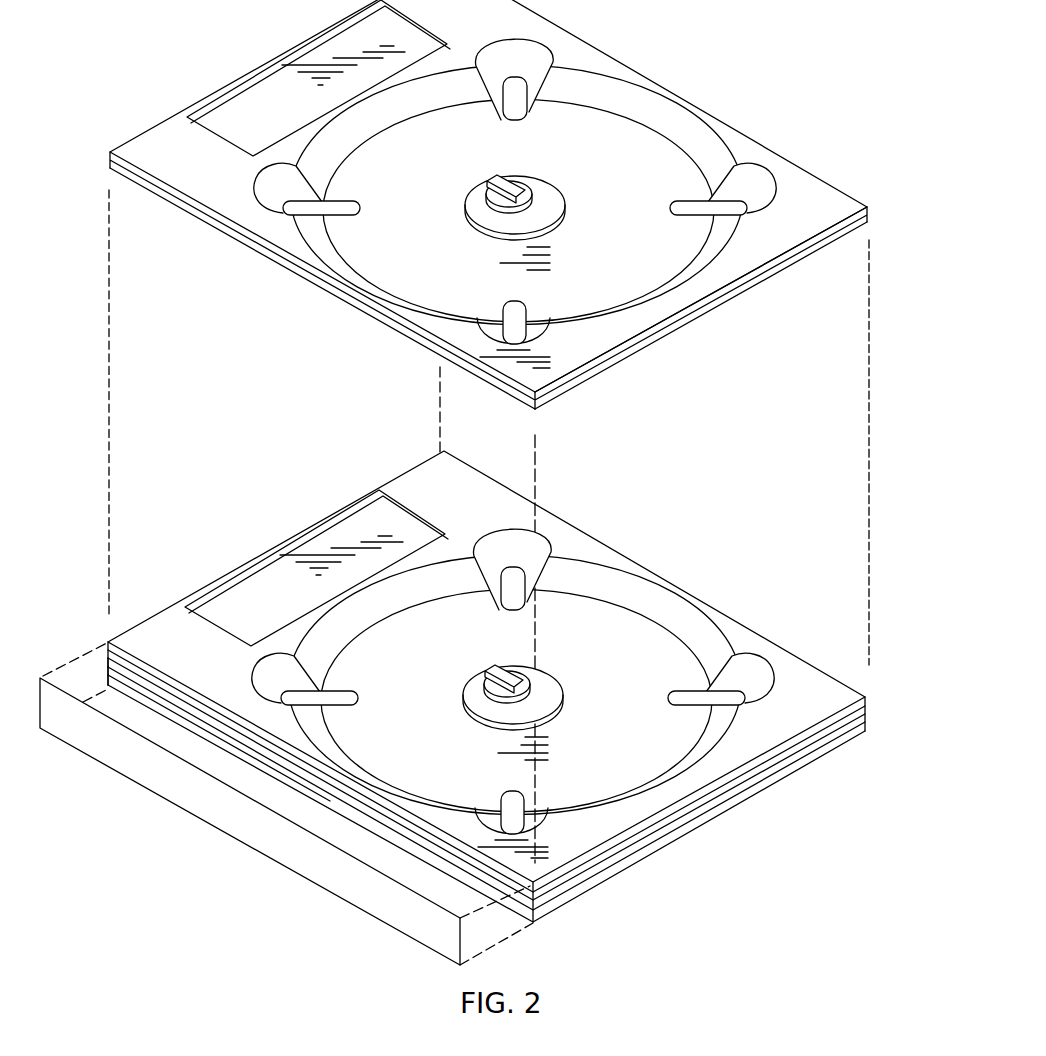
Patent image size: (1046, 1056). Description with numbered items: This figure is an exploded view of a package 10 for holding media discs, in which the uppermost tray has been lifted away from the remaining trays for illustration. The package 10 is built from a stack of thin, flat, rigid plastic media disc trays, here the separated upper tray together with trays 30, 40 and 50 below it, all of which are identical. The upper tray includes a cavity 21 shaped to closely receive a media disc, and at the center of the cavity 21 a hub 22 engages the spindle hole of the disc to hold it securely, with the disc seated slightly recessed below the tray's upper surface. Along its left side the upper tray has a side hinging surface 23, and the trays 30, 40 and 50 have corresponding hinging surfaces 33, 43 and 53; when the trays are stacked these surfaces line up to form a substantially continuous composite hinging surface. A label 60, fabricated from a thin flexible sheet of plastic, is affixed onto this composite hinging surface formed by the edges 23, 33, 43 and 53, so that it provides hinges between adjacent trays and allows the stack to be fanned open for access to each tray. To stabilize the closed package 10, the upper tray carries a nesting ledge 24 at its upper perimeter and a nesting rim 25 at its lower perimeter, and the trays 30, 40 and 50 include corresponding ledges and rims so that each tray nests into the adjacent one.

The package 10 is at (488, 204).
The cavity 21 is at (637, 155).
The hub 22 is at (483, 200).
The side hinging surface 23 is at (228, 232).
The nesting ledge 24 is at (600, 362).
The nesting rim 25 is at (678, 330).
The media disc tray 30 is at (870, 702).
The media disc tray 40 is at (870, 714).
The media disc tray 50 is at (860, 733).
The hinging surface 33 is at (108, 658).
The hinging surface 43 is at (108, 668).
The hinging surface 53 is at (118, 686).
The label 60 is at (262, 840).